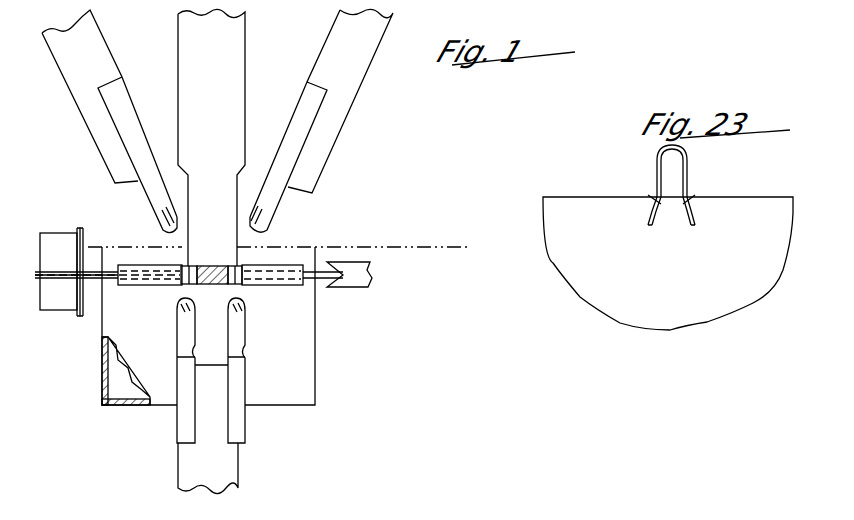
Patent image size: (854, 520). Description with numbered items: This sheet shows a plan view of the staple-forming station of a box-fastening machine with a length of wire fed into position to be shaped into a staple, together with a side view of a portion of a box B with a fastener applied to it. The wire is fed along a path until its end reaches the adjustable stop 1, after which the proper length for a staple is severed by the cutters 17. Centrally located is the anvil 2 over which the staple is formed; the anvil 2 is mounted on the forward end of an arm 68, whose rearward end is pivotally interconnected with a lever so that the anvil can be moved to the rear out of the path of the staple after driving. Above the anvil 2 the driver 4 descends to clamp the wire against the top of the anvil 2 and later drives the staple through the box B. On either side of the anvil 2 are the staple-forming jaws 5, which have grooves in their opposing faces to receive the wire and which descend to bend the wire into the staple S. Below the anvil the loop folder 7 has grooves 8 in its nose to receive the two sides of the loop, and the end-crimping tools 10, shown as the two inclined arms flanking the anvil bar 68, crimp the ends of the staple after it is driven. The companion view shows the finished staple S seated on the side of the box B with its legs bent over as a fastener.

In FIG. 1, the arm 68 is at (211, 137).
In FIG. 1, the end-crimping tools 10 is at (156, 208).
In FIG. 1, the box B is at (100, 372).
In FIG. 23, the box B is at (668, 263).
In FIG. 1, the cutters 17 is at (58, 243).
In FIG. 1, the staple-forming jaws 5 is at (152, 287).
In FIG. 1, the anvil 2 is at (243, 279).
In FIG. 1, the driver 4 is at (213, 264).
In FIG. 1, the adjustable stop 1 is at (345, 288).
In FIG. 1, the loop folder 7 is at (240, 325).
In FIG. 1, the grooves 8 is at (233, 303).
In FIG. 23, the staple S is at (652, 156).